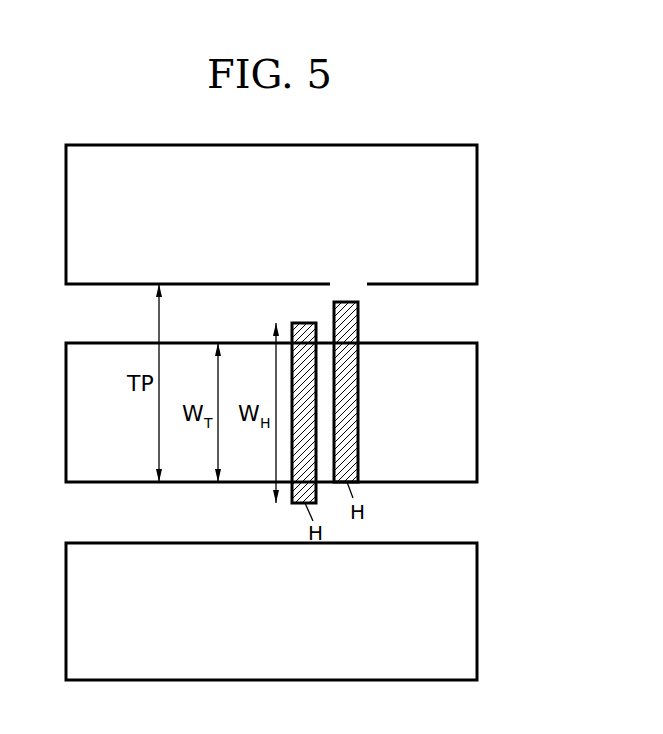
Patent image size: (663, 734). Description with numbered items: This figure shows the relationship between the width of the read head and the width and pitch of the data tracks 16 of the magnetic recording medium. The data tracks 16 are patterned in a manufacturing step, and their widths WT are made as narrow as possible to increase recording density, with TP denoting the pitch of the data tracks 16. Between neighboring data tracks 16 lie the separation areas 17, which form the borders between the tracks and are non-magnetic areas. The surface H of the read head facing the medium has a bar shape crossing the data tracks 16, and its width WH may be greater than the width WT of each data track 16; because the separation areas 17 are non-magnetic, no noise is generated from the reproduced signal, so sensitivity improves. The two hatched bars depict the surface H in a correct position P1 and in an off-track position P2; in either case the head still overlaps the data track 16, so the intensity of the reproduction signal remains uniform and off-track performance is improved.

The data track 16 is at (477, 216).
The separation area 17 is at (475, 313).
The correct position P1 is at (304, 399).
The off-track position P2 is at (345, 377).